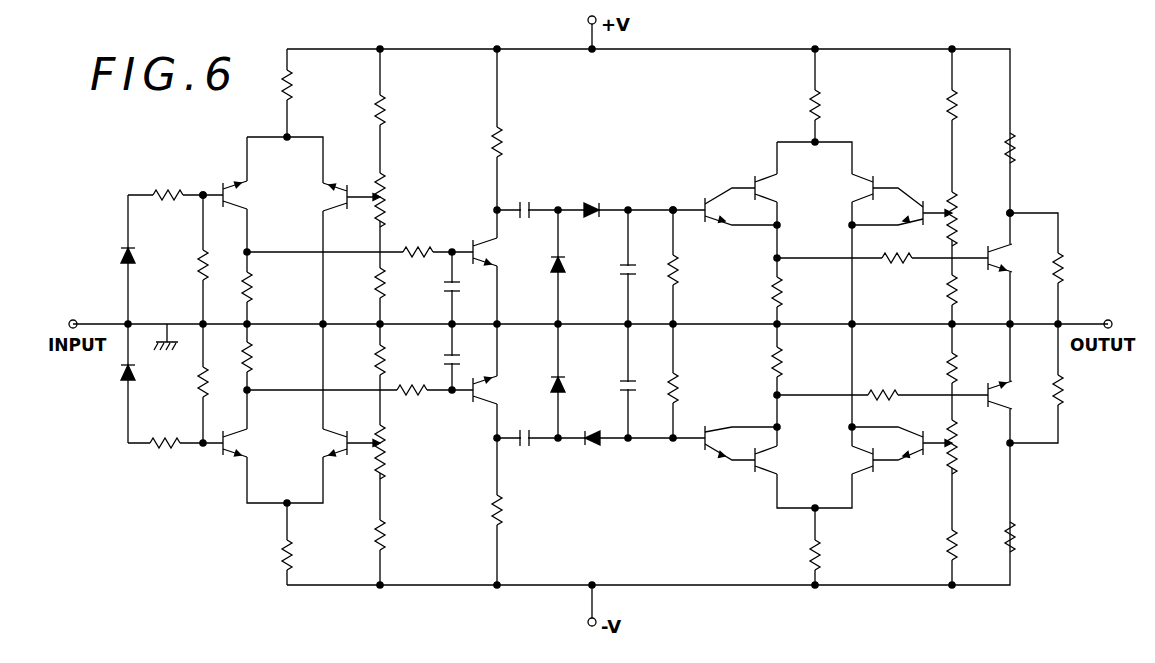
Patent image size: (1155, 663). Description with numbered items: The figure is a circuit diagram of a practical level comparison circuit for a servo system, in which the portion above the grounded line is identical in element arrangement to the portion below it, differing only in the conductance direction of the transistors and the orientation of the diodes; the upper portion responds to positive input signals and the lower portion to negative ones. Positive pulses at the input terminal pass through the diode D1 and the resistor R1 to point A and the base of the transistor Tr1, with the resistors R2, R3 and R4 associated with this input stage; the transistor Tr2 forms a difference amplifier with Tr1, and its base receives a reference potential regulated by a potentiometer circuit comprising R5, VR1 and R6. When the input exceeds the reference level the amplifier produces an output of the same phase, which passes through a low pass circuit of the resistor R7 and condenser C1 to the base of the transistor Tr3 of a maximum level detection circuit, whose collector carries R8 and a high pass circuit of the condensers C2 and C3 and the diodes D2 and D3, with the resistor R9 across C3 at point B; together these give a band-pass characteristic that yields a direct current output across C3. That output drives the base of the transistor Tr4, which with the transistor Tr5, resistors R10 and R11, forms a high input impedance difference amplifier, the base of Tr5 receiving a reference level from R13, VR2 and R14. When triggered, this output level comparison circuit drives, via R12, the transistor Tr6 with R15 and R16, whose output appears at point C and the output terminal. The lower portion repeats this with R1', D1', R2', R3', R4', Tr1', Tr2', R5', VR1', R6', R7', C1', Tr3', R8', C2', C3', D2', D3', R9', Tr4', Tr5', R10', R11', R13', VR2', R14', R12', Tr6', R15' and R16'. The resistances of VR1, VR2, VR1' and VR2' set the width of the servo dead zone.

The input resistor R1 is at (166, 184).
The input resistor R1' is at (165, 457).
The diode D1 is at (140, 246).
The diode D1' is at (143, 365).
The resistor R2 is at (215, 266).
The resistor R2' is at (218, 383).
The resistor R3 is at (259, 287).
The resistor R3' is at (262, 357).
The resistor R4 is at (302, 85).
The resistor R4' is at (304, 555).
The potentiometer circuit resistor R5 is at (397, 110).
The potentiometer circuit resistor R5' is at (395, 536).
The variable resistor VR1 is at (403, 200).
The variable resistor VR1' is at (402, 452).
The potentiometer circuit resistor R6 is at (392, 283).
The potentiometer circuit resistor R6' is at (395, 358).
The low pass circuit resistor R7 is at (418, 241).
The low pass circuit resistor R7' is at (412, 405).
The low pass circuit condenser C1 is at (442, 301).
The low pass circuit condenser C1' is at (437, 355).
The resistor R8 is at (510, 142).
The resistor R8' is at (512, 510).
The high pass circuit condenser C2 is at (523, 198).
The high pass circuit condenser C2' is at (523, 452).
The high pass circuit diode D2 is at (570, 270).
The high pass circuit diode D2' is at (573, 385).
The high pass circuit diode D3 is at (595, 198).
The high pass circuit diode D3' is at (597, 453).
The condenser C3 is at (637, 257).
The condenser C3' is at (639, 371).
The resistor R9 is at (685, 271).
The resistor R9' is at (688, 388).
The resistor R10 is at (794, 292).
The resistor R10' is at (796, 362).
The resistor R11 is at (832, 105).
The resistor R11' is at (834, 555).
The resistor R12 is at (896, 275).
The resistor R12' is at (887, 382).
The potentiometer circuit resistor R13 is at (969, 106).
The potentiometer circuit resistor R13' is at (971, 546).
The potentiometer circuit resistor R14 is at (969, 292).
The potentiometer circuit resistor R14' is at (971, 369).
The variable resistor VR2 is at (971, 219).
The variable resistor VR2' is at (973, 447).
The resistor R15 is at (1027, 150).
The resistor R15' is at (1029, 537).
The output resistor R16 is at (1074, 269).
The output resistor R16' is at (1077, 391).
The transistor Tr1 is at (249, 196).
The transistor Tr1' is at (252, 444).
The transistor Tr2 is at (324, 197).
The transistor Tr2' is at (322, 444).
The transistor Tr3 is at (499, 256).
The transistor Tr3' is at (502, 391).
The transistor Tr4 is at (734, 189).
The transistor Tr4' is at (730, 462).
The transistor Tr5 is at (898, 194).
The transistor Tr5' is at (898, 465).
The transistor Tr6 is at (1015, 260).
The transistor Tr6' is at (993, 408).
The point A is at (203, 193).
The point B is at (672, 208).
The point C is at (1010, 213).